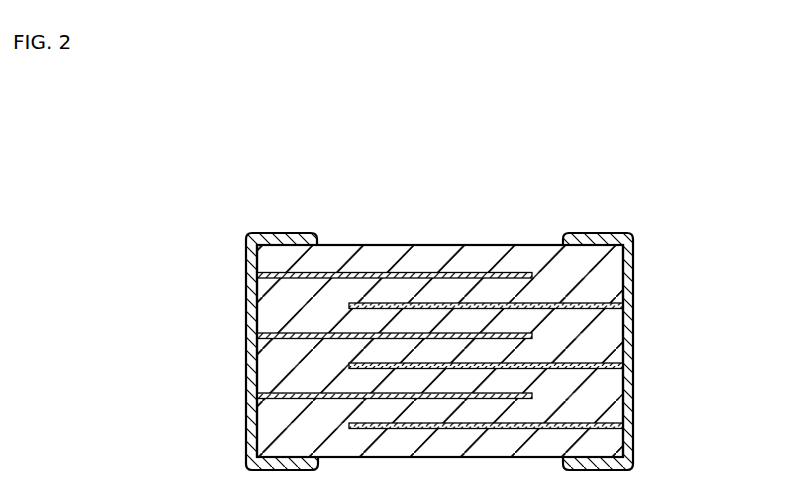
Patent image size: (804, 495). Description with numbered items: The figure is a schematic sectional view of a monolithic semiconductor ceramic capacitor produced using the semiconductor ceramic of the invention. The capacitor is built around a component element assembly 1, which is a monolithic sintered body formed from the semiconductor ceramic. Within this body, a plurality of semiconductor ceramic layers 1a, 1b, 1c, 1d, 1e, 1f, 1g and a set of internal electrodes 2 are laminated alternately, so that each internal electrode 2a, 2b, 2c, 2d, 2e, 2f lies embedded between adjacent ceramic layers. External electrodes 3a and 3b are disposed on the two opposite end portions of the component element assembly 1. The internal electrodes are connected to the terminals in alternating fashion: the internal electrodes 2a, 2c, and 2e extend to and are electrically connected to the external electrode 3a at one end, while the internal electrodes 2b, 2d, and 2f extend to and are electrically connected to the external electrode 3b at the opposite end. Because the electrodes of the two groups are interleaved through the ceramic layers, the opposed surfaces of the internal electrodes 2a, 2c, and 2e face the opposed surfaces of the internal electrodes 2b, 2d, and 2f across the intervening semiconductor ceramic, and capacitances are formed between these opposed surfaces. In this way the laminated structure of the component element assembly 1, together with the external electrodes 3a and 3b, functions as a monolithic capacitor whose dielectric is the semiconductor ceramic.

The component element assembly 1 is at (372, 346).
The semiconductor ceramic layer 1a is at (277, 260).
The semiconductor ceramic layer 1b is at (280, 295).
The semiconductor ceramic layer 1c is at (277, 318).
The semiconductor ceramic layer 1d is at (277, 350).
The semiconductor ceramic layer 1e is at (277, 382).
The semiconductor ceramic layer 1f is at (277, 413).
The semiconductor ceramic layer 1g is at (396, 439).
The internal electrodes 2 is at (509, 360).
The internal electrode 2a is at (533, 272).
The internal electrode 2b is at (620, 303).
The internal electrode 2c is at (533, 333).
The internal electrode 2d is at (620, 363).
The internal electrode 2e is at (533, 395).
The internal electrode 2f is at (532, 433).
The external electrode 3a is at (269, 240).
The external electrode 3b is at (628, 250).